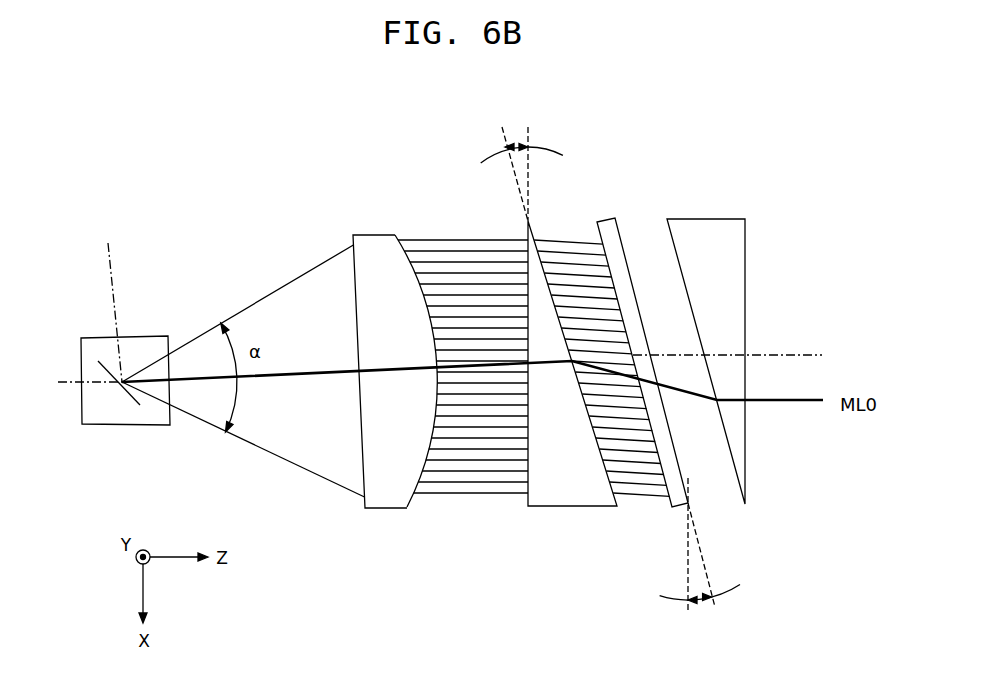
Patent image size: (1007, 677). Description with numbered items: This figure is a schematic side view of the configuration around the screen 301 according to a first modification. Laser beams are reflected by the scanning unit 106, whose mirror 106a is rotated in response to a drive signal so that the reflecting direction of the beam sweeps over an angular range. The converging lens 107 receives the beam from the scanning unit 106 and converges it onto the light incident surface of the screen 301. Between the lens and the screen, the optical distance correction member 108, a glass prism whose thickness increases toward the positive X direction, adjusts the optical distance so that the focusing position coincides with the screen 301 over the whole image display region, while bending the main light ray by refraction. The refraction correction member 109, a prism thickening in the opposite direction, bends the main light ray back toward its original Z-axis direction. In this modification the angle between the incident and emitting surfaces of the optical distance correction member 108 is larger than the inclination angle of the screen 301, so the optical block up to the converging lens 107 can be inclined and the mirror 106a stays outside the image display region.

The scanning unit 106 is at (107, 337).
The mirror 106a is at (100, 367).
The converging lens 107 is at (383, 227).
The optical distance correction member 108 is at (568, 506).
The screen 301 is at (603, 218).
The refraction correction member 109 is at (730, 222).